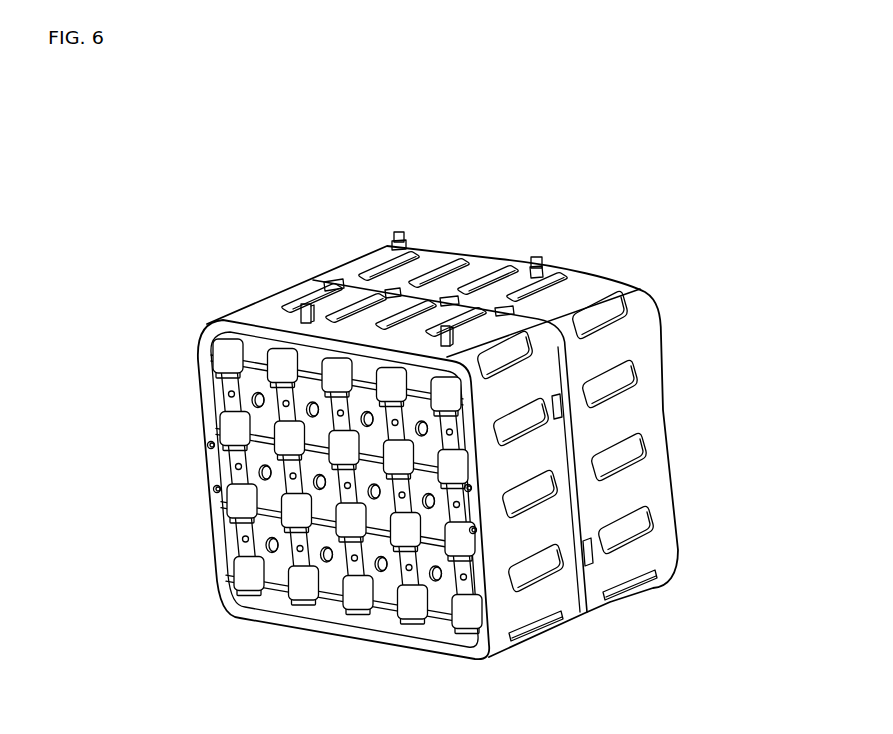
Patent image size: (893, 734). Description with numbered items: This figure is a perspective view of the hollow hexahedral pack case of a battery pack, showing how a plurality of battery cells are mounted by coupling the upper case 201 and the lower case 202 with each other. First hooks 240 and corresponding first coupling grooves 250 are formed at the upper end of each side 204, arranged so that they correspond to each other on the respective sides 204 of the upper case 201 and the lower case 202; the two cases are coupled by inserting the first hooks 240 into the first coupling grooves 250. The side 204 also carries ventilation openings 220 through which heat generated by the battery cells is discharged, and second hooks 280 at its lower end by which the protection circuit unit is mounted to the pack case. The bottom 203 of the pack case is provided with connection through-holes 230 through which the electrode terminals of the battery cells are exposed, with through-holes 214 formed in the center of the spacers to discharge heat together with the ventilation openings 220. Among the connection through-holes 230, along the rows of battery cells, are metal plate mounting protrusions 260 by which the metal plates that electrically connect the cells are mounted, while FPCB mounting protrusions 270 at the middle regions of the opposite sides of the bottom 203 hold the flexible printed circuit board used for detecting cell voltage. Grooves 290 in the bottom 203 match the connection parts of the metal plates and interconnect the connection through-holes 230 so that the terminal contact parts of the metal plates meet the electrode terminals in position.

The upper case 201 is at (426, 201).
The lower case 202 is at (181, 573).
The bottom 203 is at (211, 398).
The side 204 is at (605, 575).
The through-hole 214 is at (272, 550).
The ventilation opening 220 is at (640, 522).
The connection through-hole 230 is at (218, 352).
The first hook 240 is at (338, 266).
The first coupling groove 250 is at (338, 266).
The metal plate mounting protrusion 260 is at (355, 562).
The FPCB mounting protrusion 270 is at (208, 444).
The second hook 280 is at (545, 259).
The groove 290 is at (410, 578).